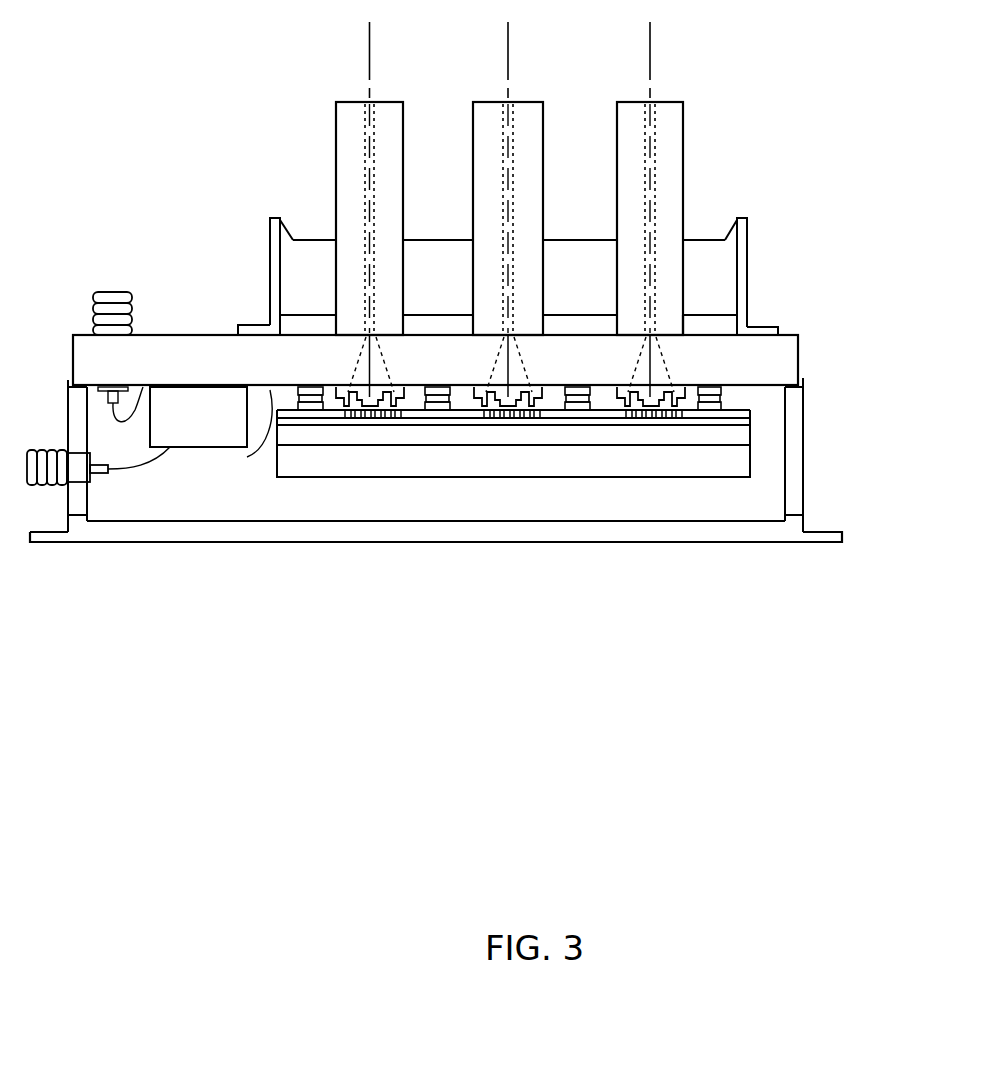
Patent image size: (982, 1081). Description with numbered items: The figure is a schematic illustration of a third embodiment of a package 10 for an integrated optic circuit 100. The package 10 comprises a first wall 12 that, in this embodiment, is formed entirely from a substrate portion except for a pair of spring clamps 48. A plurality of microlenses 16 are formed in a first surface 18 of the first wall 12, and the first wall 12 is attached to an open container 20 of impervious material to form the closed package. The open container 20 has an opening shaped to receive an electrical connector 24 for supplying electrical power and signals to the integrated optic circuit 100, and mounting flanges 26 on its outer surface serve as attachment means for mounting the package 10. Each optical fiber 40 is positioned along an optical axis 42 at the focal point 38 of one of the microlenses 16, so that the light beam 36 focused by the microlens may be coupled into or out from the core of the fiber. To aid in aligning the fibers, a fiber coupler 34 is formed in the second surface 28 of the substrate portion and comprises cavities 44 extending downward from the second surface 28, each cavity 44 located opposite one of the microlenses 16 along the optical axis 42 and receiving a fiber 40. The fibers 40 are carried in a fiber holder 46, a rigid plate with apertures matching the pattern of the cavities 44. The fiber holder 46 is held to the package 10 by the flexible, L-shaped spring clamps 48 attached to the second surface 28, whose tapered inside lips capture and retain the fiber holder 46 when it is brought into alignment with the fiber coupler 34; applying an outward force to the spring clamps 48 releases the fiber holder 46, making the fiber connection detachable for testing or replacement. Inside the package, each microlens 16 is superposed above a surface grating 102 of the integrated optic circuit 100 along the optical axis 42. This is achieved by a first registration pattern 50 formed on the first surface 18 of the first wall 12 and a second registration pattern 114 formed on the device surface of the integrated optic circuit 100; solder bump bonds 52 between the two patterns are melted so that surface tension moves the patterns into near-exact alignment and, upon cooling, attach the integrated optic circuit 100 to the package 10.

The package 10 is at (762, 596).
The first wall 12 is at (72, 355).
The microlenses 16 is at (367, 393).
The first surface 18 is at (229, 388).
The open container 20 is at (662, 543).
The electrical connector 24 is at (110, 292).
The mounting flanges 26 is at (42, 531).
The second surface 28 is at (205, 334).
The fiber coupler 34 is at (725, 327).
The light beam 36 is at (390, 374).
The focal point 38 is at (373, 336).
The optical fiber 40 is at (336, 148).
The optical axis 42 is at (368, 65).
The cavities 44 is at (684, 323).
The fiber holder 46 is at (332, 257).
The spring clamps 48 is at (268, 240).
The first registration pattern 50 is at (723, 390).
The solder bump bonds 52 is at (723, 397).
The integrated optic circuit 100 is at (752, 460).
The surface gratings 102 is at (378, 419).
The second registration pattern 114 is at (713, 409).